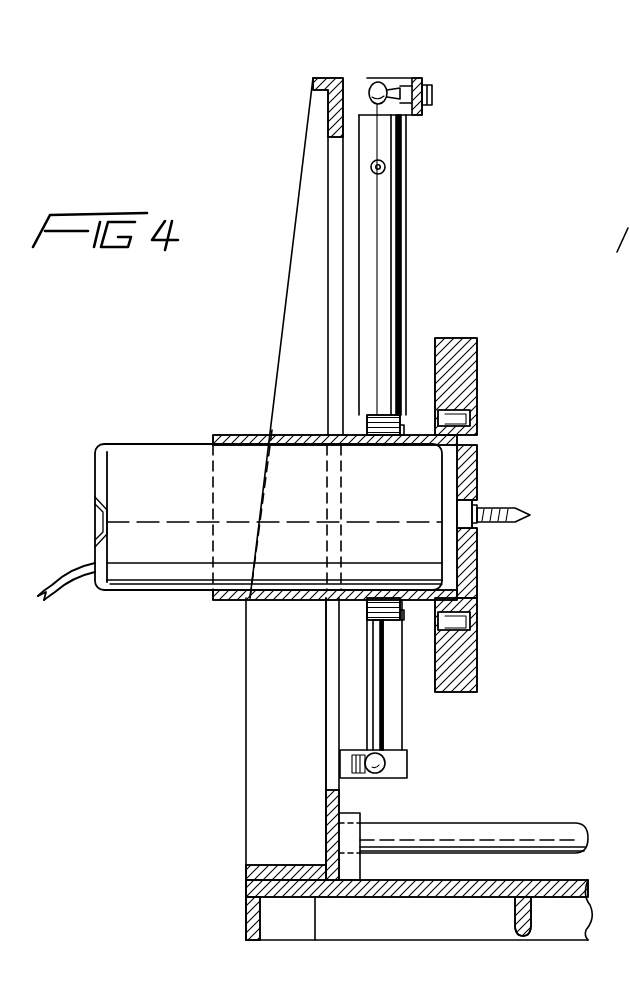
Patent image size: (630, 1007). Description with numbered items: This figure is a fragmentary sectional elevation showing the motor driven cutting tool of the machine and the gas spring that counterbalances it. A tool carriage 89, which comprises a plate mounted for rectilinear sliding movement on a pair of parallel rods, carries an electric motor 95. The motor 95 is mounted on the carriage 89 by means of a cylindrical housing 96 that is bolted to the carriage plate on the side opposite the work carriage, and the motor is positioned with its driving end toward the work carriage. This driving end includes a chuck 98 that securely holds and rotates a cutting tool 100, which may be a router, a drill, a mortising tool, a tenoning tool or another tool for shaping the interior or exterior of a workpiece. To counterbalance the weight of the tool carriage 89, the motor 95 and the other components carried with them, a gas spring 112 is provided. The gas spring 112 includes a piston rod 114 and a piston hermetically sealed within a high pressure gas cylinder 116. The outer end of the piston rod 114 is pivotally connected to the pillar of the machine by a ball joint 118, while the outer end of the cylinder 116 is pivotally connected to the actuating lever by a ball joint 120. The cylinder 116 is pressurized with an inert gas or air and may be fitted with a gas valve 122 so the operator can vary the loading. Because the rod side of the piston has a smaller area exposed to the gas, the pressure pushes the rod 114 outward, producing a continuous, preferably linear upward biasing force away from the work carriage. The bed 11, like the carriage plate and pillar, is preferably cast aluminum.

The bed 11 is at (590, 880).
The tool carriage 89 is at (479, 368).
The electric motor 95 is at (158, 591).
The cylindrical housing 96 is at (238, 601).
The chuck 98 is at (478, 498).
The cutting tool 100 is at (513, 523).
The gas spring 112 is at (381, 256).
The piston rod 114 is at (386, 713).
The high pressure gas cylinder 116 is at (398, 298).
The ball joint 118 is at (386, 762).
The ball joint 120 is at (380, 84).
The gas valve 122 is at (385, 166).